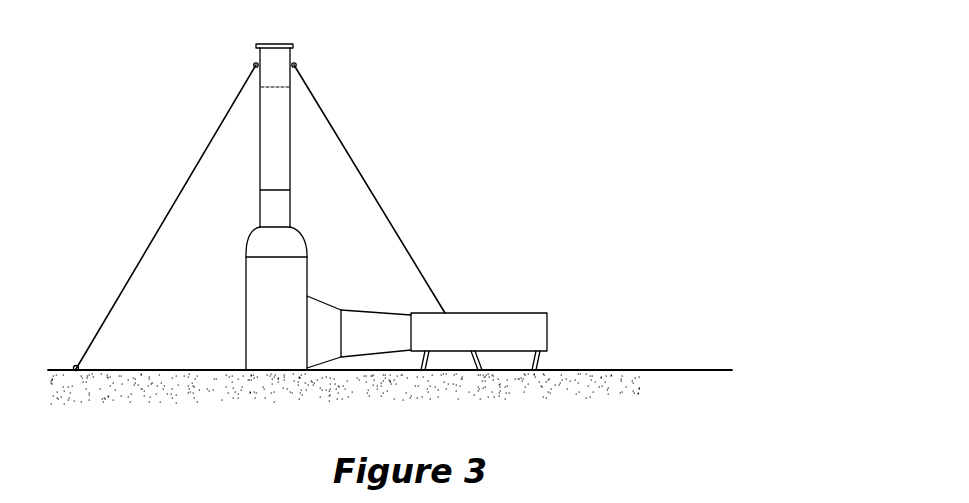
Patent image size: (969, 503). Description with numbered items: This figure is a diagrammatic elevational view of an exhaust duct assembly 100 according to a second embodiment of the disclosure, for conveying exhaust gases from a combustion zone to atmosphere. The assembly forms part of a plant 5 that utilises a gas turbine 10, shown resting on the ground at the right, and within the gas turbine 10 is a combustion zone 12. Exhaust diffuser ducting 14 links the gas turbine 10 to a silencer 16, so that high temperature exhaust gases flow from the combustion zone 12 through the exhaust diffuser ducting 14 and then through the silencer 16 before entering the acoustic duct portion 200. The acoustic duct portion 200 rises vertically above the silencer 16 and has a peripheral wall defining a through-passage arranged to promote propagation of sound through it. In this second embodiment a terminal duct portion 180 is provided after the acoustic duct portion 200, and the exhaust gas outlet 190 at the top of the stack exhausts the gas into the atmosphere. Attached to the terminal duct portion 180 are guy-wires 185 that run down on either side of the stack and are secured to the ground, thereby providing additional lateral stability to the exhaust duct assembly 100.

The plant 5 is at (607, 184).
The exhaust duct assembly 100 is at (413, 197).
The gas turbine 10 is at (488, 312).
The combustion zone 12 is at (533, 329).
The exhaust diffuser ducting 14 is at (374, 309).
The silencer 16 is at (246, 283).
The guy-wires 185 is at (137, 262).
The acoustic duct portion 200 is at (259, 140).
The terminal duct portion 180 is at (288, 57).
The exhaust gas outlet 190 is at (281, 44).